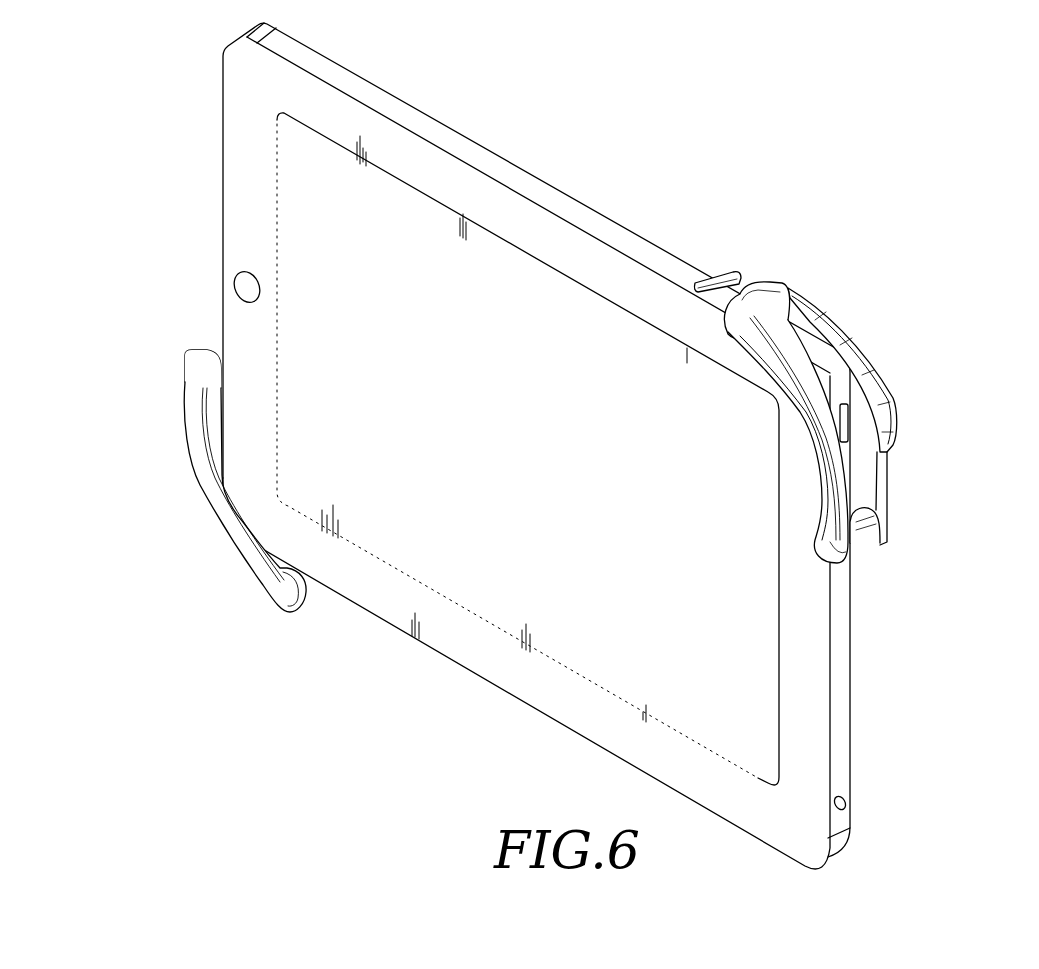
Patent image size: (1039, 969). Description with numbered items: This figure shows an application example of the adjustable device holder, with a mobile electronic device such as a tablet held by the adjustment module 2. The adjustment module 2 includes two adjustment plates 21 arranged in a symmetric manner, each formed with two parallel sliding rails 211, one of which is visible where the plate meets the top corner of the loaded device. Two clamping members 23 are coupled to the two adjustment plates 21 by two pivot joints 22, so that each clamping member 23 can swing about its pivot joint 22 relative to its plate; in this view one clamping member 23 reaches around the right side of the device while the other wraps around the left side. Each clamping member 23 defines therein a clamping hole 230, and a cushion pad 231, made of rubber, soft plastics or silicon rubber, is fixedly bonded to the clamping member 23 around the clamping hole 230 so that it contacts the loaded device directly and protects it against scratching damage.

The adjustment module 2 is at (554, 398).
The adjustment plate 21 is at (737, 293).
The sliding rail 211 is at (708, 278).
The pivot joint 22 is at (900, 394).
The clamping member 23 is at (213, 514).
The clamping hole 230 is at (868, 494).
The cushion pad 231 is at (219, 385).